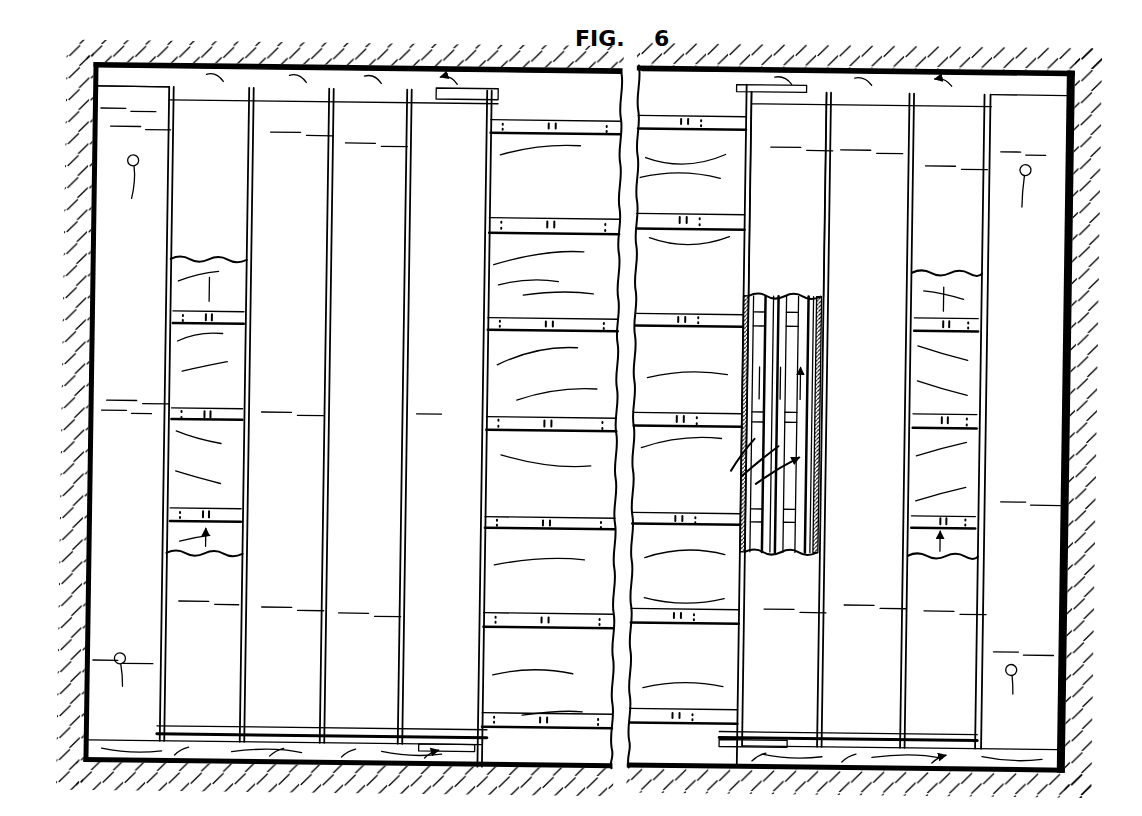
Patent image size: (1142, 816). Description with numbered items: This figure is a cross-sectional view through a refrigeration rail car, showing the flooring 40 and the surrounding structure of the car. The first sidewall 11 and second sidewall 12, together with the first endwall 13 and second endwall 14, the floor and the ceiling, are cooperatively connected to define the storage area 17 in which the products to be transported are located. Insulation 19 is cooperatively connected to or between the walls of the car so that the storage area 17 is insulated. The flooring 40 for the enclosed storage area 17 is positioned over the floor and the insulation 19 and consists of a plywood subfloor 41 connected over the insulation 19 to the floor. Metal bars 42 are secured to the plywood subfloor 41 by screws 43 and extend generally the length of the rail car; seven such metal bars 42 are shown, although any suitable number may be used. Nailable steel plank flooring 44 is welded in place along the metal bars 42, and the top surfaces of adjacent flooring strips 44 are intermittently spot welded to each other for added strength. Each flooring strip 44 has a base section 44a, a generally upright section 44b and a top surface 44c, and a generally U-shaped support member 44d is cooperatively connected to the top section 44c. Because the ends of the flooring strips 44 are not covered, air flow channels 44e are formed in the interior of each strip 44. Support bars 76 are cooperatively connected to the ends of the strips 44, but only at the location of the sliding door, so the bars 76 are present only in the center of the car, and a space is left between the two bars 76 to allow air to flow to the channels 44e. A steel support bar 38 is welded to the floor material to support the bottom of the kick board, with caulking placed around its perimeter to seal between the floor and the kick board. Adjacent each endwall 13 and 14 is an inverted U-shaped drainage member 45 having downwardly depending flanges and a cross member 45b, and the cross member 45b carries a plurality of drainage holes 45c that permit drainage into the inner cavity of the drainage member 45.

The first sidewall 11 is at (673, 768).
The second sidewall 12 is at (560, 74).
The first endwall 13 is at (96, 318).
The second endwall 14 is at (1064, 318).
The storage area 17 is at (675, 104).
The insulation 19 is at (84, 171).
The steel support bar 38 is at (353, 100).
The flooring 40 is at (206, 579).
The plywood subfloor 41 is at (558, 286).
The metal bars 42 is at (555, 211).
The screws 43 is at (606, 320).
The nailable steel plank flooring 44 is at (222, 636).
The base section 44a is at (744, 383).
The upright section 44b is at (743, 358).
The top surface 44c is at (805, 273).
The U-shaped support member 44d is at (796, 469).
The air flow channels 44e is at (752, 464).
The drainage member 45 is at (114, 436).
The cross member 45b is at (152, 544).
The drainage holes 45c is at (578, 438).
The support bars 76 is at (450, 90).